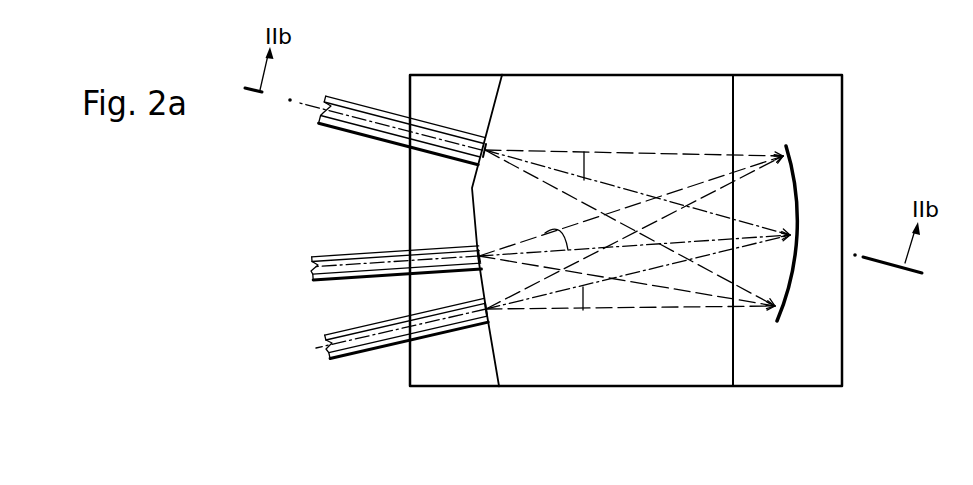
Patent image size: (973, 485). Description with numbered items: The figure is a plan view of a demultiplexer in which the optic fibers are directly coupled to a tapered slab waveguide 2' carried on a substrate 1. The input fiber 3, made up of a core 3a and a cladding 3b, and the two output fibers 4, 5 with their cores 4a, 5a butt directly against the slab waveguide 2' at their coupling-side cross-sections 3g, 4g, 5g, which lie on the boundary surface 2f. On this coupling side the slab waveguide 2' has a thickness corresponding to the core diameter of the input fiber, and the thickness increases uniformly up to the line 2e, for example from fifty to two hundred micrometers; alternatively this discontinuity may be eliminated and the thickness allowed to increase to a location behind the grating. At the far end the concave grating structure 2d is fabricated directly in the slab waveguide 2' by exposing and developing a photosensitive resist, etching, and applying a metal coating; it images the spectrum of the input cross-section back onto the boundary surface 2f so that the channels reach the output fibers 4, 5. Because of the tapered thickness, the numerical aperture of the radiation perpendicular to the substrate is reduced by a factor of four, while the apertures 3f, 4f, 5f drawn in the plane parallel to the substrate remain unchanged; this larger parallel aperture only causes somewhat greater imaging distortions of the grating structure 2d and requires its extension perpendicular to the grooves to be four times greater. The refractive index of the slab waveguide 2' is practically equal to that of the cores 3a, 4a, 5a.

The substrate 1 is at (475, 227).
The slab waveguide 2' is at (670, 210).
The grating structure 2d is at (797, 216).
The line 2e is at (733, 373).
The boundary surface 2f is at (500, 372).
The input fiber 3 is at (392, 120).
The core 3a is at (340, 118).
The cladding 3b is at (386, 138).
The aperture 3f is at (590, 153).
The cross-section 3g is at (486, 150).
The output fiber 4 is at (387, 261).
The core 4a is at (314, 283).
The aperture 4f is at (551, 226).
The cross-section 4g is at (480, 252).
The output fiber 5 is at (402, 359).
The core 5a is at (330, 357).
The aperture 5f is at (585, 300).
The cross-section 5g is at (486, 311).